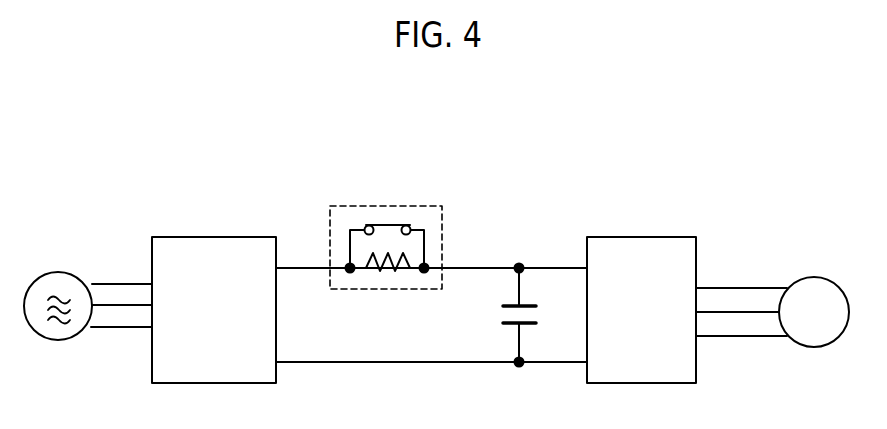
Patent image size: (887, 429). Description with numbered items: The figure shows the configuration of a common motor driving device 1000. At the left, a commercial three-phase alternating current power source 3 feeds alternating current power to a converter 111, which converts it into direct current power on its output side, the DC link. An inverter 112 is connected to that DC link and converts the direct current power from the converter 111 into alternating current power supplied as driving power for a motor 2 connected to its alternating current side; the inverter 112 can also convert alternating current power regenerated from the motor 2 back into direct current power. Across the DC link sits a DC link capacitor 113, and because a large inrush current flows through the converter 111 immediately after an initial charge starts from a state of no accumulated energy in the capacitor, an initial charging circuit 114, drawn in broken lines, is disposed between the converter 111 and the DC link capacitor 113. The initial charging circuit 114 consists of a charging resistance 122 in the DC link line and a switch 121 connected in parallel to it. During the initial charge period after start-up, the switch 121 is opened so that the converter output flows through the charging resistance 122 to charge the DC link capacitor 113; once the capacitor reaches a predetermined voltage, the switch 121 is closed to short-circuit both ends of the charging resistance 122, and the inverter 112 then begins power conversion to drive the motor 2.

The motor driving device 1000 is at (566, 155).
The commercial three-phase alternating current power source 3 is at (57, 271).
The converter 111 is at (192, 237).
The inverter 112 is at (600, 237).
The DC link capacitor 113 is at (532, 292).
The initial charging circuit 114 is at (442, 222).
The switch 121 is at (392, 225).
The charging resistance 122 is at (372, 268).
The motor 2 is at (813, 277).